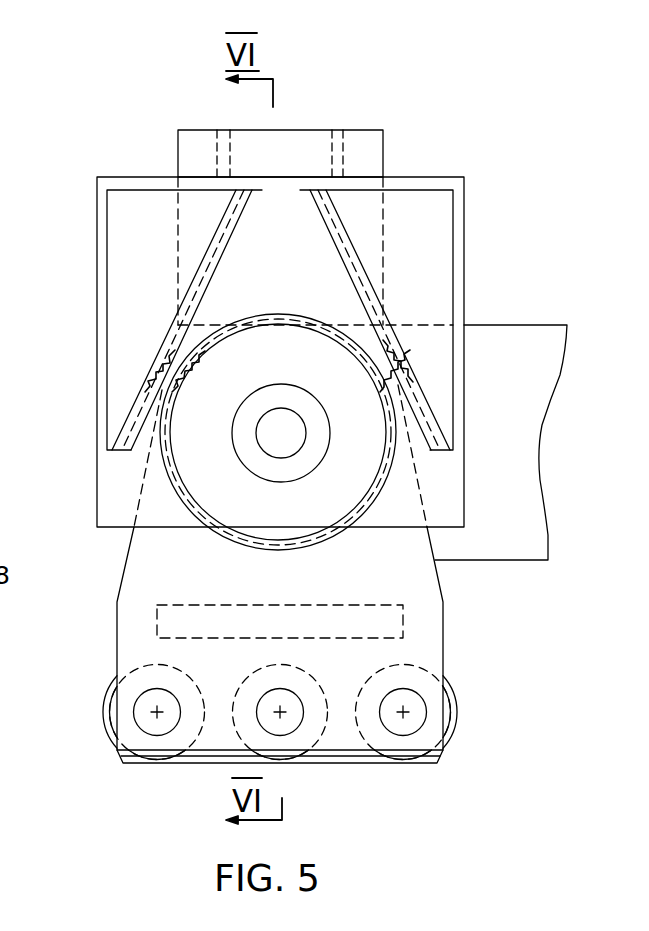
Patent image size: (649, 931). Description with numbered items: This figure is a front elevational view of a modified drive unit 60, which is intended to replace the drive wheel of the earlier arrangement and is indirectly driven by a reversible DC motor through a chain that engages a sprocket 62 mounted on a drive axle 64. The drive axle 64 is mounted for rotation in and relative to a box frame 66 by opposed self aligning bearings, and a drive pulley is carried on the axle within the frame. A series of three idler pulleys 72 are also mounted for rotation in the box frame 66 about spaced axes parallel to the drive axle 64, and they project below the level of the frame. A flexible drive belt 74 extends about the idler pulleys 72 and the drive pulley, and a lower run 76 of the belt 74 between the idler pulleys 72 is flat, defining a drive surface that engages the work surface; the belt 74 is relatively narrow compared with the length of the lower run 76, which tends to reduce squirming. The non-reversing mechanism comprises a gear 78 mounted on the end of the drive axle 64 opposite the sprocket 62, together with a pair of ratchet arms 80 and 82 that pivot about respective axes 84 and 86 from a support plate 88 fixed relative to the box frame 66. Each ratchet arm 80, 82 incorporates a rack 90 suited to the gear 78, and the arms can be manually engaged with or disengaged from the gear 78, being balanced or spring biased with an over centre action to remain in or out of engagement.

The drive unit 60 is at (524, 697).
The sprocket 62 is at (0, 498).
The drive axle 64 is at (282, 433).
The box frame 66 is at (443, 595).
The idler pulleys 72 is at (143, 762).
The flexible drive belt 74 is at (100, 712).
The lower run 76 is at (210, 763).
The gear 78 is at (312, 546).
The ratchet arm 80 is at (135, 282).
The ratchet arm 82 is at (440, 288).
The axis 84 is at (153, 230).
The axis 86 is at (404, 232).
The support plate 88 is at (291, 293).
The rack 90 is at (157, 368).